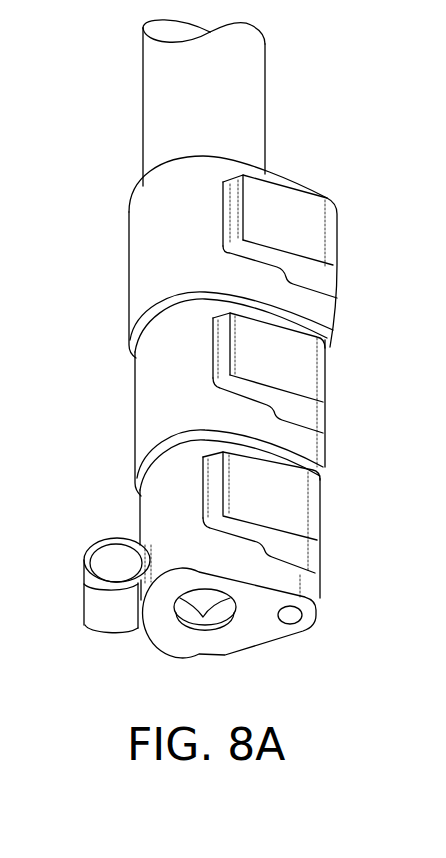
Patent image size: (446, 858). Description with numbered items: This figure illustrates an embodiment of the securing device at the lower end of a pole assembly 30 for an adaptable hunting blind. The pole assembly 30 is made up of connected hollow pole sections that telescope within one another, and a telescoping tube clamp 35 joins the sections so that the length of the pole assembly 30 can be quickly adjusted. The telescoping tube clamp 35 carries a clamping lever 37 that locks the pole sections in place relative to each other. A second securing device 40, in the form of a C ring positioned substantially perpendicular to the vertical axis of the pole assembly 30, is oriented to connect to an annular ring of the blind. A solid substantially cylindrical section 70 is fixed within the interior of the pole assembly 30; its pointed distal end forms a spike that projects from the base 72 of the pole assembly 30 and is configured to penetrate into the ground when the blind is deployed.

The pole assembly 30 is at (245, 93).
The telescoping tube clamp 35 is at (153, 507).
The clamping lever 37 is at (308, 225).
The second securing device 40 is at (109, 613).
The solid substantially cylindrical section 70 is at (203, 608).
The base 72 is at (227, 625).